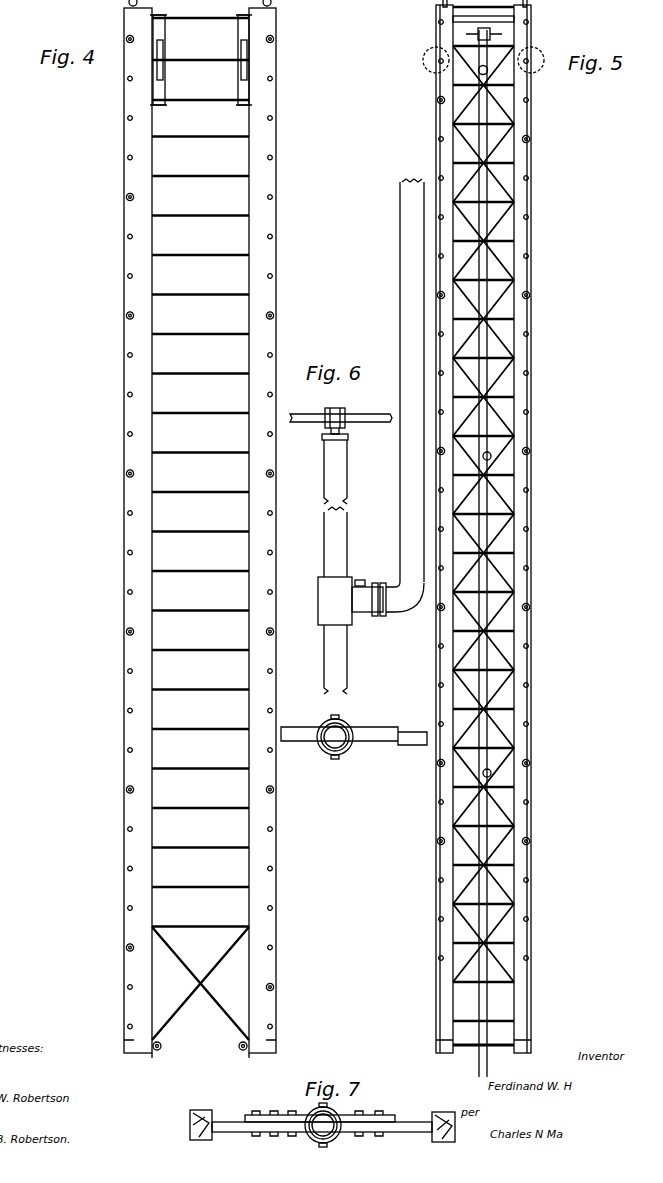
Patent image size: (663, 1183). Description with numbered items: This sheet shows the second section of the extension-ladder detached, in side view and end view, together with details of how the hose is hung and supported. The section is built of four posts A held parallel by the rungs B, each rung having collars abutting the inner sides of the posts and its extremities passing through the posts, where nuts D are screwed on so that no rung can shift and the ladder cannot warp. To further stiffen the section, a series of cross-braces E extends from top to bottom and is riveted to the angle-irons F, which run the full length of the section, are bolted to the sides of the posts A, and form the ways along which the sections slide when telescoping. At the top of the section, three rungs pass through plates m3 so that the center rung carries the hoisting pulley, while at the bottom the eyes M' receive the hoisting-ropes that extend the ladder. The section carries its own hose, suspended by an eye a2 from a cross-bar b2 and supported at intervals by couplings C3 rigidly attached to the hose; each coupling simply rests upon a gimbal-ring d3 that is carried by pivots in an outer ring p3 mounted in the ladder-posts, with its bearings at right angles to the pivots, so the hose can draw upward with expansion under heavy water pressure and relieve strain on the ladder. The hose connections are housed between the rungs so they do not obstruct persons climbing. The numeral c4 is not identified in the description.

In FIG. 4, the post A is at (266, 529).
In FIG. 5, the post A is at (534, 971).
In FIG. 7, the post A is at (467, 1108).
In FIG. 4, the rung B is at (200, 472).
In FIG. 5, the rung B is at (483, 526).
In FIG. 4, the nut D is at (199, 526).
In FIG. 5, the nut D is at (483, 490).
In FIG. 4, the plate m3 is at (201, 60).
In FIG. 4, the eye M' is at (200, 990).
In FIG. 5, the cross-brace E is at (483, 514).
In FIG. 5, the angle-iron F is at (483, 526).
In FIG. 5, the ring p3 is at (473, 553).
In FIG. 6, the ring p3 is at (354, 741).
In FIG. 7, the ring p3 is at (322, 1129).
In FIG. 5, the pipe clamp c4 is at (488, 608).
In FIG. 5, the eye a2 is at (483, 13).
In FIG. 6, the eye a2 is at (341, 410).
In FIG. 5, the cross-bar b2 is at (487, 31).
In FIG. 6, the cross-bar b2 is at (354, 420).
In FIG. 5, the coupling C3 is at (491, 69).
In FIG. 6, the coupling C3 is at (371, 601).
In FIG. 6, the gimbal-ring d3 is at (335, 737).
In FIG. 7, the gimbal-ring d3 is at (323, 1125).